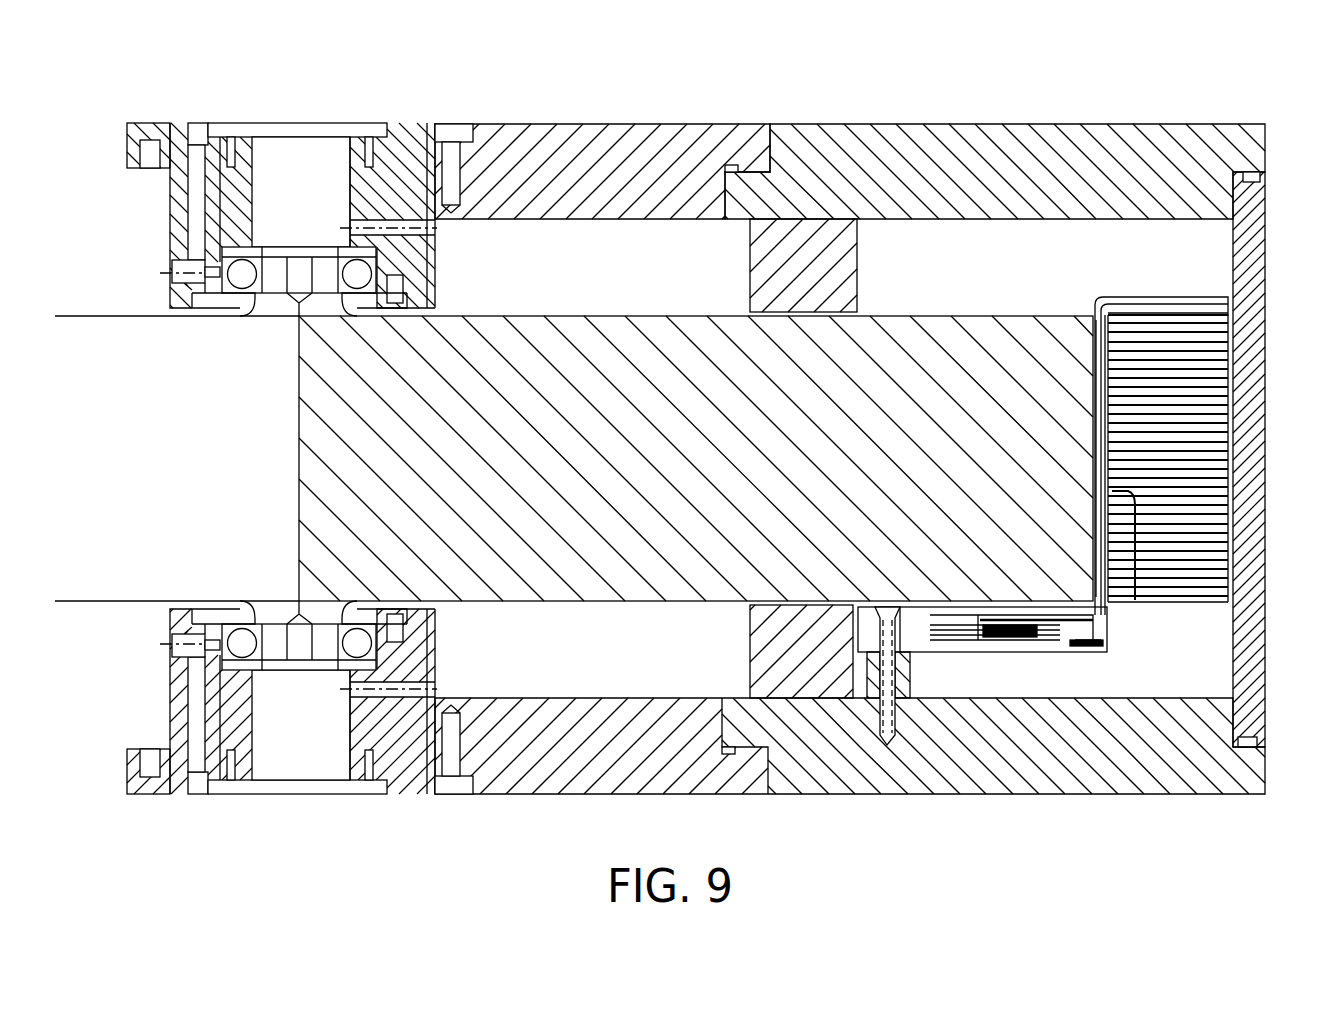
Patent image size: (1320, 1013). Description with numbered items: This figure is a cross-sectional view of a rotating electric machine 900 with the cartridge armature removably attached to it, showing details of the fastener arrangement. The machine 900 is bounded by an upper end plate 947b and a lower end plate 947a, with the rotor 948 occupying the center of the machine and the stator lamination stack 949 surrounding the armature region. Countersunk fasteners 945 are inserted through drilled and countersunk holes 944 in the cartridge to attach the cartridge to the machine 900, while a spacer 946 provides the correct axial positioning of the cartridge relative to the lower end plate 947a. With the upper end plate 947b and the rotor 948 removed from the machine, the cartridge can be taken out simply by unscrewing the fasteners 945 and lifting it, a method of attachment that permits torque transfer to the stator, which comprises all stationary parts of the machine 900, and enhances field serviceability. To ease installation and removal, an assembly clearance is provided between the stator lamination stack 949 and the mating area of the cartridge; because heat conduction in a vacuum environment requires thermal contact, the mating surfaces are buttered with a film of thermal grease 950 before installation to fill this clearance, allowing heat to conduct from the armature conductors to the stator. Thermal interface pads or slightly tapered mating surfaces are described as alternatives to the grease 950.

The rotating electric machine 900 is at (650, 93).
The upper end plate 947b is at (992, 111).
The lower end plate 947a is at (1093, 797).
The rotor 948 is at (984, 304).
The stator lamination stack 949 is at (1182, 615).
The thermal grease 950 is at (1135, 600).
The drilled and countersunk holes 944 is at (908, 624).
The countersunk fasteners 945 is at (893, 672).
The spacer 946 is at (922, 681).